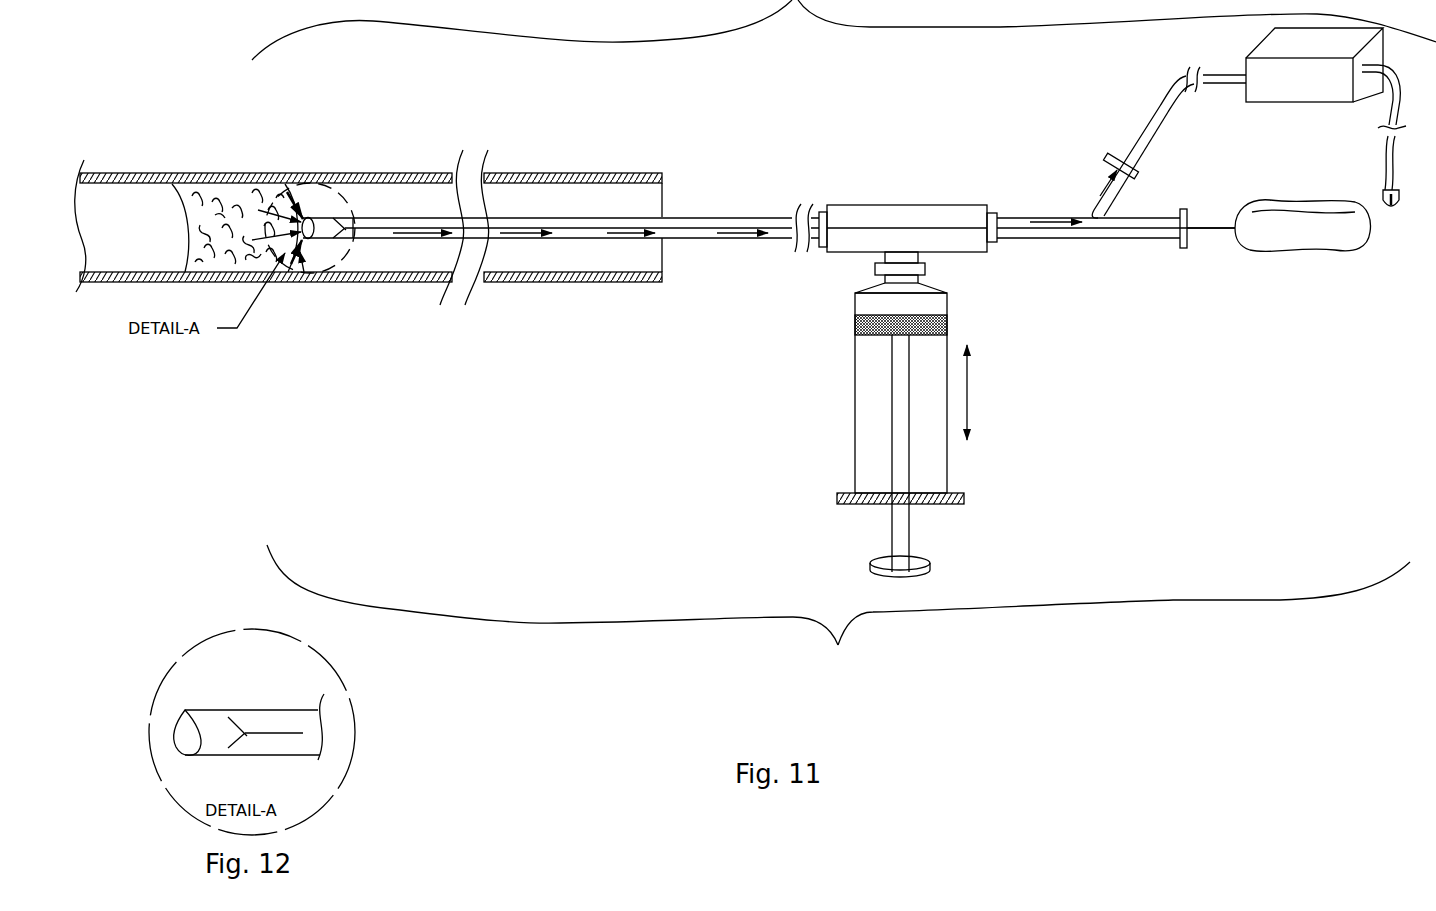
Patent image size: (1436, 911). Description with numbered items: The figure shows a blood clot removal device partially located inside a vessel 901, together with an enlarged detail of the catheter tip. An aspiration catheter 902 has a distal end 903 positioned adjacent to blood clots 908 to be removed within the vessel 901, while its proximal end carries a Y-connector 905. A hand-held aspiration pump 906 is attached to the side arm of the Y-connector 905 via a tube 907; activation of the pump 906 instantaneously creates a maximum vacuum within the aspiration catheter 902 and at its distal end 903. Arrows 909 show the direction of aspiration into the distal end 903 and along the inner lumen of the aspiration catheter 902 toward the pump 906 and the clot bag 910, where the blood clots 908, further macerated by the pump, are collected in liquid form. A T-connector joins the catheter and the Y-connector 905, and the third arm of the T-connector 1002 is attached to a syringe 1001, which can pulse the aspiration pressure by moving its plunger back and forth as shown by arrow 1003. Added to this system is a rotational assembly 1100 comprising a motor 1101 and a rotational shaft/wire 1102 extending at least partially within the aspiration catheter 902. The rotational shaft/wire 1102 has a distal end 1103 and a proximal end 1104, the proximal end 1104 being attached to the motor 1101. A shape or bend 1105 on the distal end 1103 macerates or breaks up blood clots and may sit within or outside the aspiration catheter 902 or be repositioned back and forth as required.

In FIG. 11, the vessel 901 is at (188, 173).
In FIG. 11, the aspiration catheter 902 is at (342, 245).
In FIG. 11, the distal end 903 is at (316, 220).
In FIG. 12, the distal end 903 is at (175, 722).
In FIG. 11, the Y-connector 905 is at (1081, 242).
In FIG. 11, the hand-held aspiration pump 906 is at (1255, 48).
In FIG. 11, the tube 907 is at (1155, 103).
In FIG. 11, the blood clots 908 is at (243, 203).
In FIG. 11, the arrows 909 is at (294, 265).
In FIG. 11, the clot bag 910 is at (1382, 193).
In FIG. 11, the syringe 1001 is at (948, 450).
In FIG. 11, the third arm of the T-connector 1002 is at (880, 253).
In FIG. 11, the arrow 1003 is at (970, 393).
In FIG. 11, the rotational assembly 1100 is at (843, 659).
In FIG. 11, the motor 1101 is at (1307, 252).
In FIG. 11, the rotational shaft/wire 1102 is at (505, 215).
In FIG. 11, the distal end 1103 is at (368, 233).
In FIG. 12, the distal end 1103 is at (292, 728).
In FIG. 11, the proximal end 1104 is at (1233, 237).
In FIG. 11, the shape or bend 1105 is at (342, 229).
In FIG. 12, the shape or bend 1105 is at (242, 742).